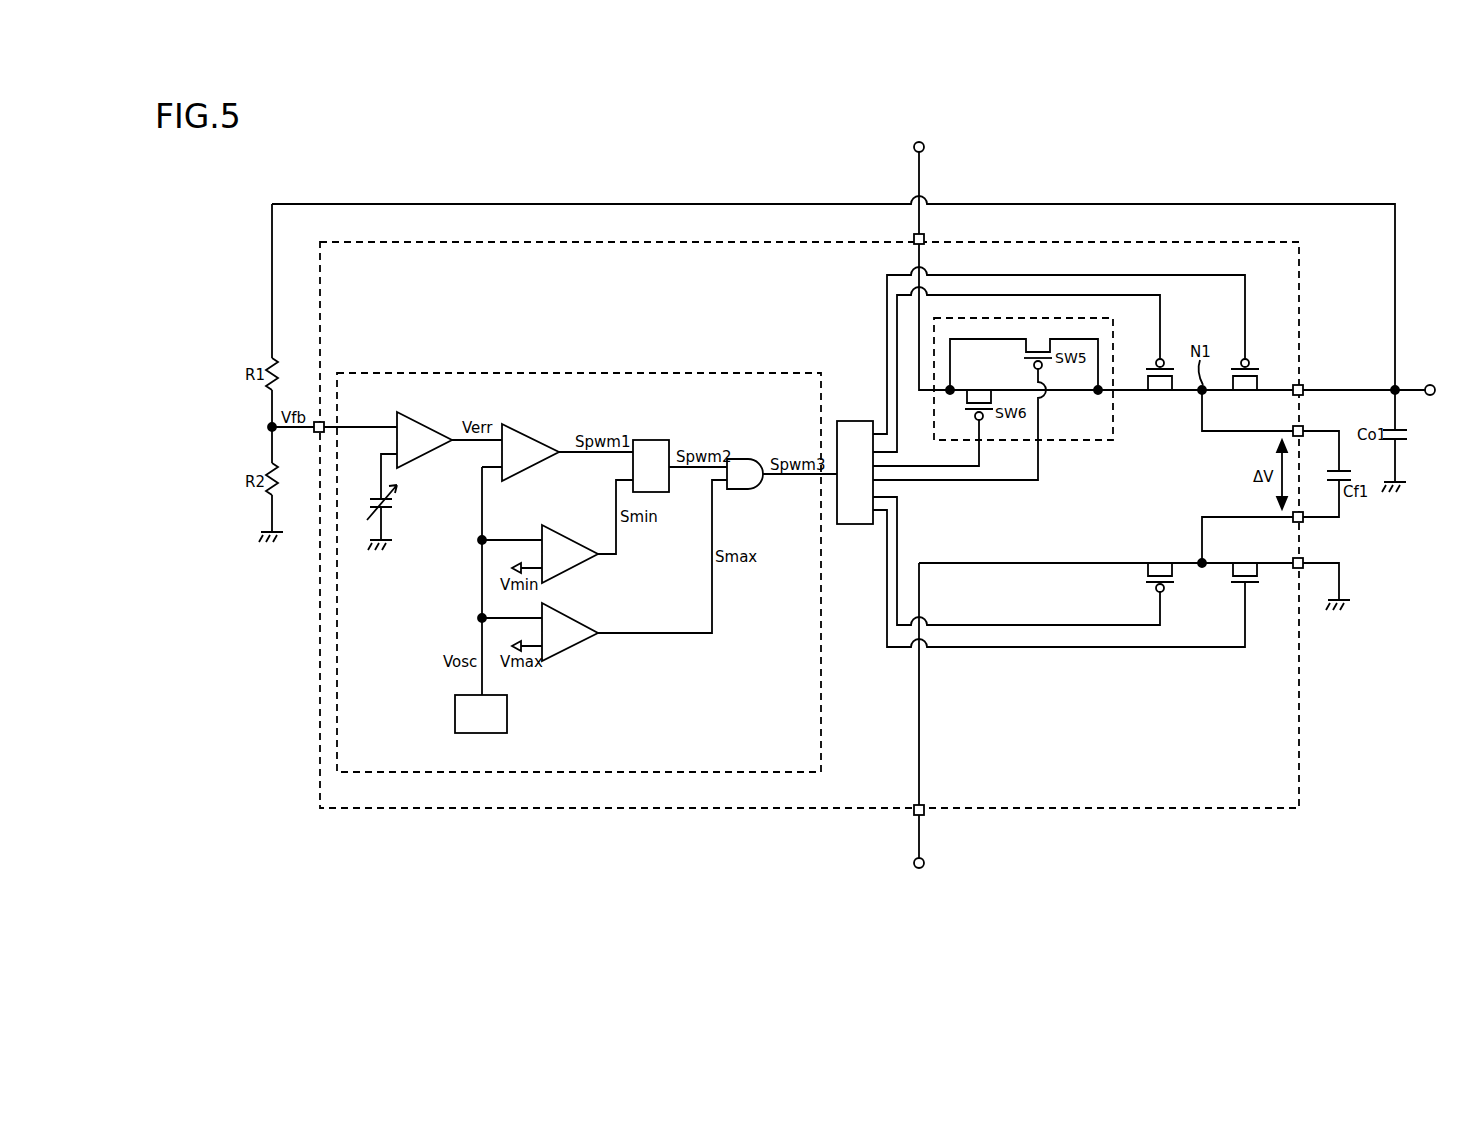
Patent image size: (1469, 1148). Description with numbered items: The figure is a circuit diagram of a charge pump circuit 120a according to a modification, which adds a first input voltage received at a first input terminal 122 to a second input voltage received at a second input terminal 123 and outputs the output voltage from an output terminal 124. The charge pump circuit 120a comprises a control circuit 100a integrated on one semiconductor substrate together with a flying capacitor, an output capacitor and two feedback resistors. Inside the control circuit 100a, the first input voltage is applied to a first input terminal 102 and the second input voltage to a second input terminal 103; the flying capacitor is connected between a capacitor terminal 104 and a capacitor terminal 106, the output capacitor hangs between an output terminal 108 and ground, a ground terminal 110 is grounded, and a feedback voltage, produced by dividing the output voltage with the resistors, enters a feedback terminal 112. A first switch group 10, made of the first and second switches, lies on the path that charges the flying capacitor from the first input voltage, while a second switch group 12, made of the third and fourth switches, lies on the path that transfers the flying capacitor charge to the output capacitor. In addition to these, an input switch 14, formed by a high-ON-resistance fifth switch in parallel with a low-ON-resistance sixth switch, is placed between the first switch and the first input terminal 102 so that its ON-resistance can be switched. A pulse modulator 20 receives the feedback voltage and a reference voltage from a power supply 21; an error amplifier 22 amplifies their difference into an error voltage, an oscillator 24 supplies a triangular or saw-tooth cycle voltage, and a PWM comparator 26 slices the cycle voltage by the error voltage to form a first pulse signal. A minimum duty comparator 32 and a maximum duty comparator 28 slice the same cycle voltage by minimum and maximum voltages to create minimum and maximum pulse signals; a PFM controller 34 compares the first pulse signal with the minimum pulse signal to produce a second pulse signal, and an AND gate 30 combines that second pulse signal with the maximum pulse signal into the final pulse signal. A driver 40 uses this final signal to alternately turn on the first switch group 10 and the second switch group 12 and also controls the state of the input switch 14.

The first switch group 10 is at (1203, 470).
The second switch group 12 is at (1203, 475).
The input switch 14 is at (1085, 441).
The pulse modulator 20 is at (822, 735).
The power supply 21 is at (393, 503).
The error amplifier 22 is at (428, 420).
The oscillator 24 is at (507, 718).
The PWM comparator 26 is at (536, 438).
The maximum duty comparator 28 is at (578, 620).
The AND gate 30 is at (742, 459).
The minimum duty comparator 32 is at (578, 542).
The PFM controller 34 is at (650, 440).
The driver 40 is at (857, 421).
The control circuit 100a is at (1300, 775).
The first input terminal 102 is at (924, 237).
The second input terminal 103 is at (924, 814).
The capacitor terminal 104 is at (1303, 429).
The capacitor terminal 106 is at (1303, 520).
The output terminal 108 is at (1303, 388).
The ground terminal 110 is at (1301, 568).
The feedback terminal 112 is at (319, 422).
The charge pump circuit 120a is at (806, 921).
The first input terminal 122 is at (925, 150).
The second input terminal 123 is at (925, 862).
The output terminal 124 is at (1431, 396).